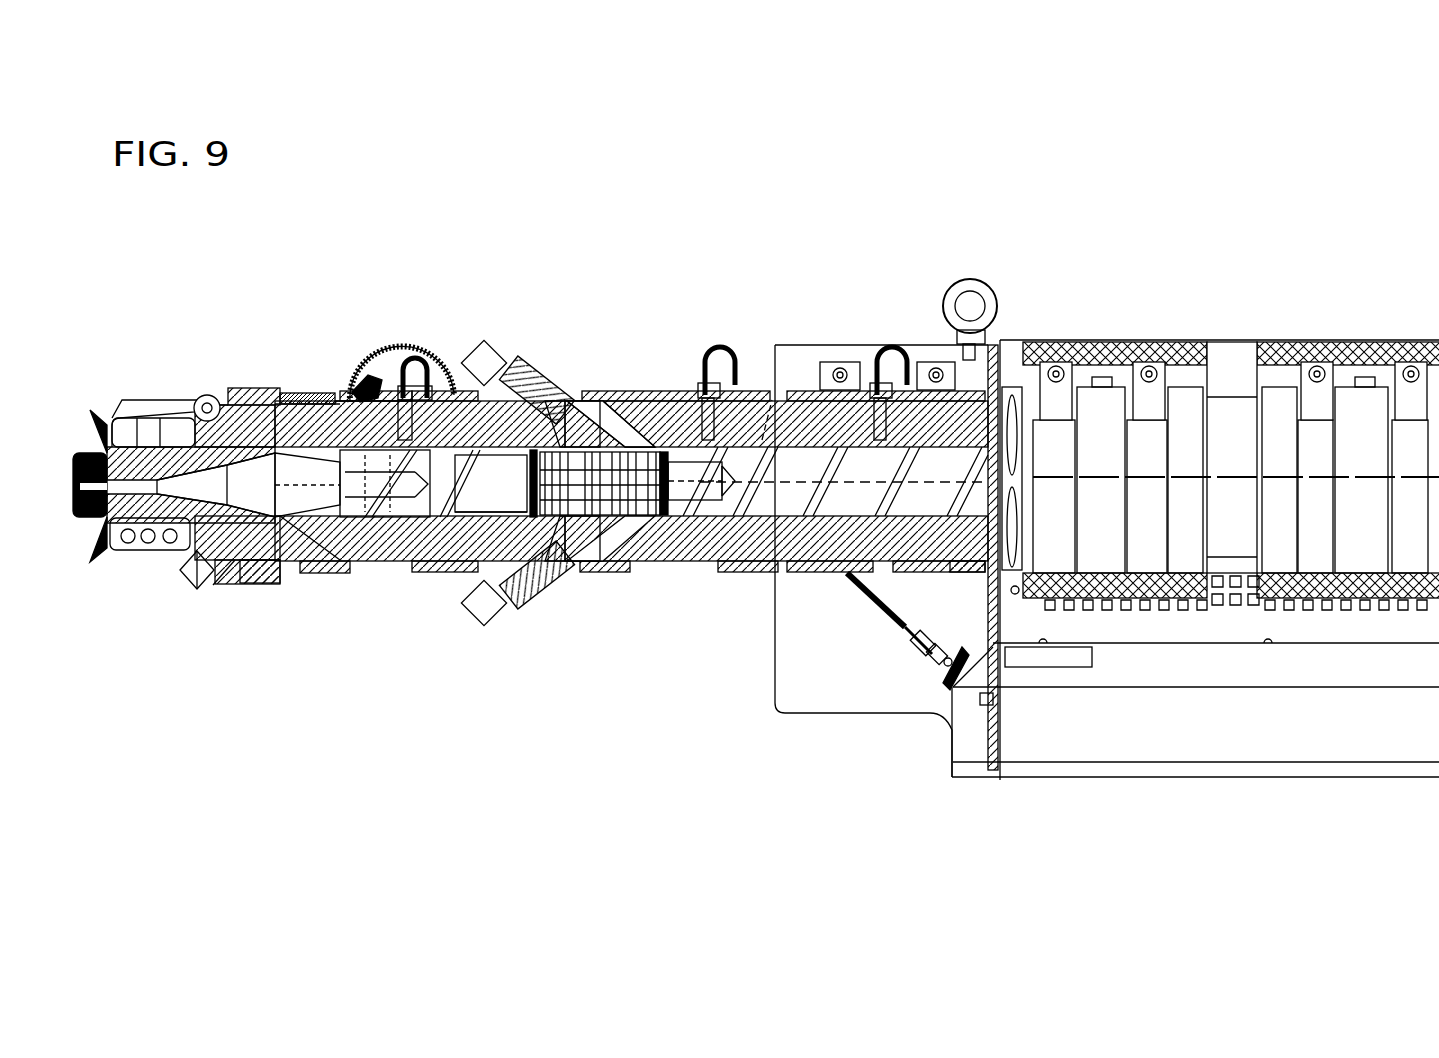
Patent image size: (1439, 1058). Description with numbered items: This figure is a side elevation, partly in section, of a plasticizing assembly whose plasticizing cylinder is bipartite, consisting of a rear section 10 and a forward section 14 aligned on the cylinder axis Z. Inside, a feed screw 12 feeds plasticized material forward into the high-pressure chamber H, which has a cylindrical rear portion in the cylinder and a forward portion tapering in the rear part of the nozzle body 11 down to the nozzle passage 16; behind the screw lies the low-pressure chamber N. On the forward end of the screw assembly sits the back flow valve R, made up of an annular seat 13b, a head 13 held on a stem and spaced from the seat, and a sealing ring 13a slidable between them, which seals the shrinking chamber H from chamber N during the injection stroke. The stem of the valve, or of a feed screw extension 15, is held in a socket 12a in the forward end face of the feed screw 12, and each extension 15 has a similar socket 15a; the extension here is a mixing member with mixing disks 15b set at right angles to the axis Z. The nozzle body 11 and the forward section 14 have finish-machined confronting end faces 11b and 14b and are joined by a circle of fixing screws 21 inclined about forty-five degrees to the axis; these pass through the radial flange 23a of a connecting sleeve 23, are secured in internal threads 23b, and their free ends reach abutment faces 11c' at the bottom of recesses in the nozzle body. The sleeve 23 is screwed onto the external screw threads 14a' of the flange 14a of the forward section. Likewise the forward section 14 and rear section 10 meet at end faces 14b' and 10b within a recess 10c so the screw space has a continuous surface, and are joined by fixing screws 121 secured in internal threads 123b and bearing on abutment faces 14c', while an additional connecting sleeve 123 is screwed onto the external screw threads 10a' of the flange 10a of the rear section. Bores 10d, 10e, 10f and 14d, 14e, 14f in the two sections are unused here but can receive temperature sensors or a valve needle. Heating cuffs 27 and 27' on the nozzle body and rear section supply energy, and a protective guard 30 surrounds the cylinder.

The plasticizing cylinder 10 is at (713, 584).
The flange 10a is at (611, 353).
The external screw threads 10a' is at (627, 383).
The end face 10b is at (567, 590).
The recess 10c is at (633, 400).
The bore 10d is at (655, 397).
The bore 10e is at (732, 362).
The bore 10f is at (650, 578).
The nozzle body 11 is at (138, 398).
The end face 11b is at (345, 395).
The abutment face 11c' is at (206, 604).
The feed screw 12 is at (860, 478).
The socket 12a is at (772, 400).
The head 13 is at (123, 557).
The sealing ring 13a is at (280, 584).
The annular seat 13b is at (395, 398).
The forward section 14 is at (417, 584).
The flange 14a is at (307, 365).
The external screw threads 14a' is at (296, 349).
The forward end face 14b is at (247, 616).
The end face 14b' is at (593, 574).
The abutment face 14c' is at (561, 378).
The bore 14d is at (328, 400).
The bore 14e is at (445, 350).
The bore 14f is at (333, 577).
The feed screw extension 15 is at (506, 483).
The socket 15a is at (522, 497).
The mixing disks 15b is at (648, 577).
The nozzle passage 16 is at (105, 437).
The fixing screws 21 is at (212, 396).
The connecting sleeve 23 is at (234, 390).
The radial flange 23a is at (203, 402).
The internal threads 23b is at (152, 556).
The heating cuff 27 is at (146, 368).
The heating cuff 27' is at (859, 623).
The protective guard 30 is at (1195, 505).
The fixing screws 121 is at (480, 365).
The additional connecting sleeve 123 is at (518, 362).
The internal threads 123b is at (512, 607).
The high-pressure chamber H is at (102, 538).
The low-pressure chamber N is at (668, 577).
The back flow valve R is at (325, 539).
The cylinder axis Z is at (95, 489).